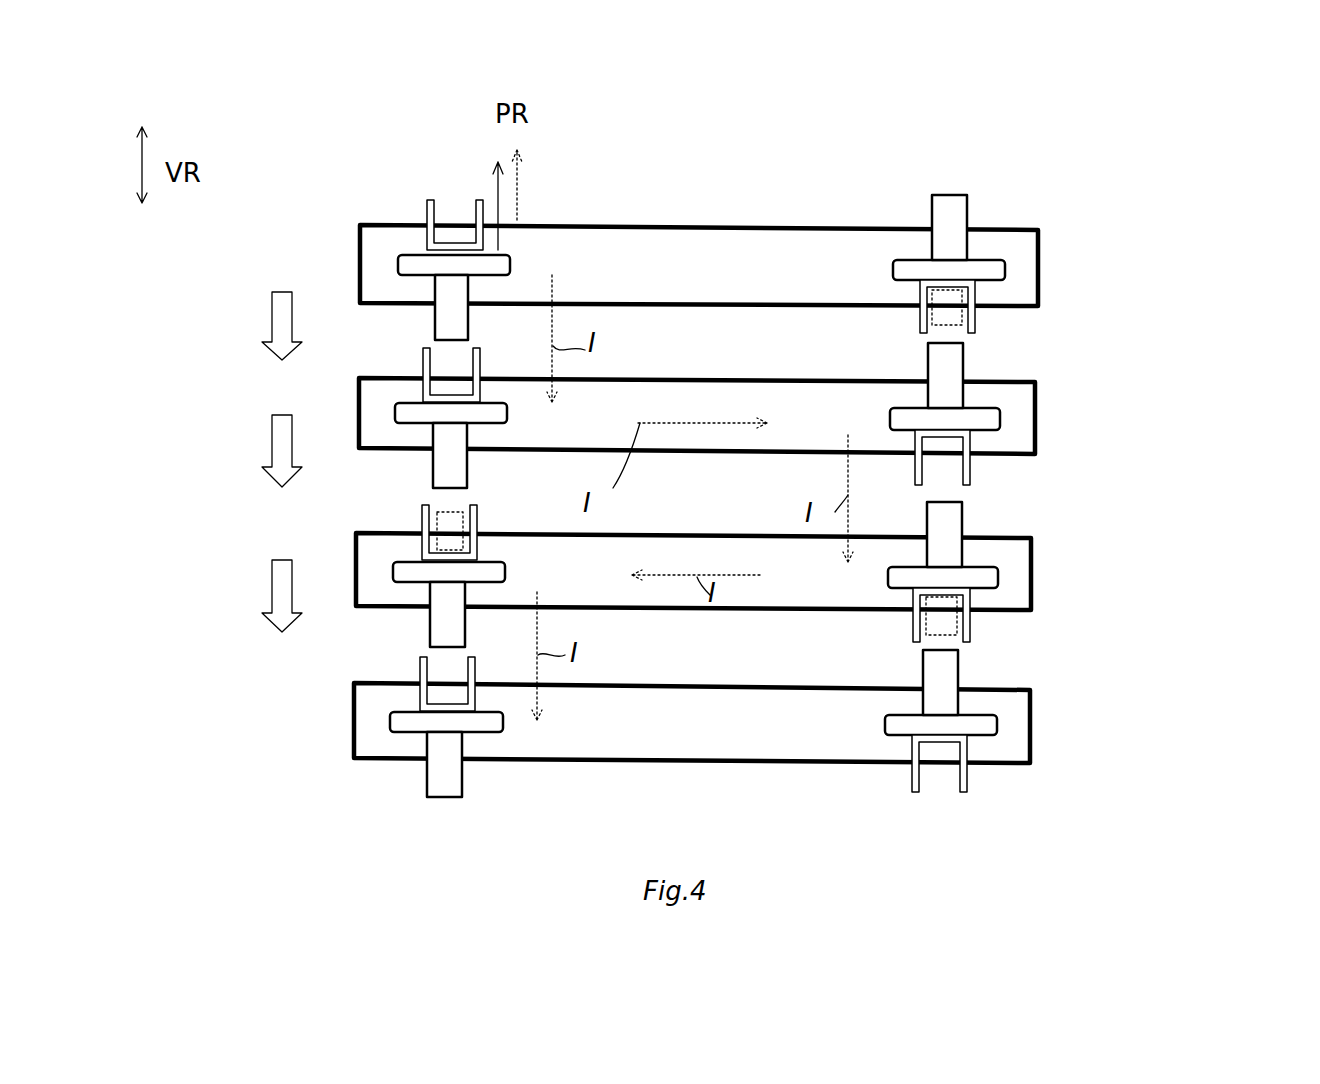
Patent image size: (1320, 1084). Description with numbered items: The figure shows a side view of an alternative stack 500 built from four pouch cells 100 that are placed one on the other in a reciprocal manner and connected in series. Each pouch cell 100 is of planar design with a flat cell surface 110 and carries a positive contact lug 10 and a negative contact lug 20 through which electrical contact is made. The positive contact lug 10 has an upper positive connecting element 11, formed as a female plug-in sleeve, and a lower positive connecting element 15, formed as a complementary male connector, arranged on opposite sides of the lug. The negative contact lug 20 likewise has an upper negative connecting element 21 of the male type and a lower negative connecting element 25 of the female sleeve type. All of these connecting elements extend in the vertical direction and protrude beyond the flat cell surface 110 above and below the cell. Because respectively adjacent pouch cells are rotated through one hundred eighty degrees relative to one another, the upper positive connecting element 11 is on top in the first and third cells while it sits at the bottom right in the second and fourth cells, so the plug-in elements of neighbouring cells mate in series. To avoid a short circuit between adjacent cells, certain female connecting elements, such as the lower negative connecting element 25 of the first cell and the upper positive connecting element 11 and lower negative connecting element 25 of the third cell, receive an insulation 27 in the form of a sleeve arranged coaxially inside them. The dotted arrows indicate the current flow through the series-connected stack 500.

The positive contact lug 10 is at (675, 486).
The upper positive connecting element 11 is at (425, 205).
The lower positive connecting element 15 is at (447, 320).
The negative contact lug 20 is at (397, 405).
The upper negative connecting element 21 is at (455, 782).
The lower negative connecting element 25 is at (423, 362).
The insulation 27 is at (425, 508).
The pouch cell 100 is at (1101, 190).
The flat cell surface 110 is at (715, 225).
The stack 500 is at (1265, 816).